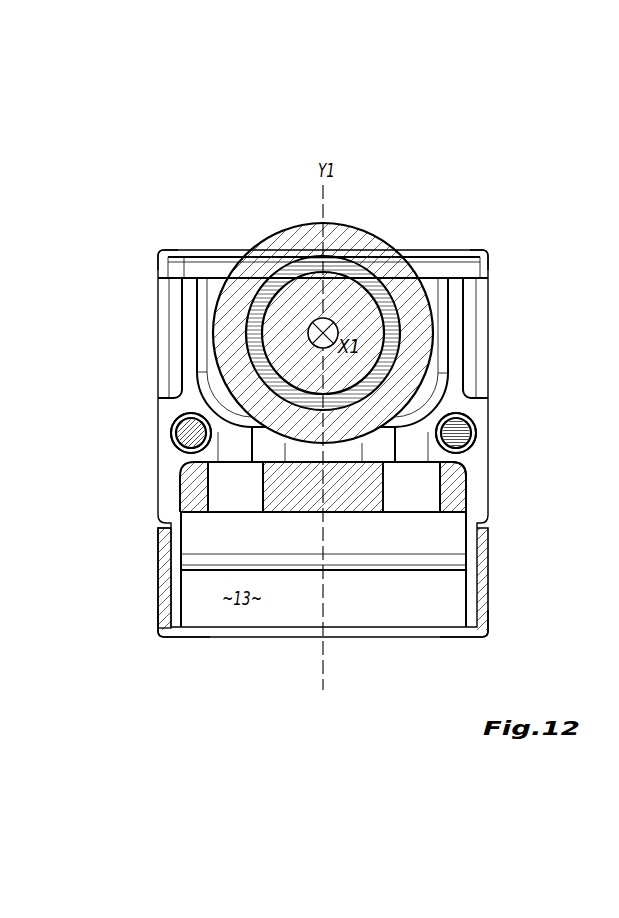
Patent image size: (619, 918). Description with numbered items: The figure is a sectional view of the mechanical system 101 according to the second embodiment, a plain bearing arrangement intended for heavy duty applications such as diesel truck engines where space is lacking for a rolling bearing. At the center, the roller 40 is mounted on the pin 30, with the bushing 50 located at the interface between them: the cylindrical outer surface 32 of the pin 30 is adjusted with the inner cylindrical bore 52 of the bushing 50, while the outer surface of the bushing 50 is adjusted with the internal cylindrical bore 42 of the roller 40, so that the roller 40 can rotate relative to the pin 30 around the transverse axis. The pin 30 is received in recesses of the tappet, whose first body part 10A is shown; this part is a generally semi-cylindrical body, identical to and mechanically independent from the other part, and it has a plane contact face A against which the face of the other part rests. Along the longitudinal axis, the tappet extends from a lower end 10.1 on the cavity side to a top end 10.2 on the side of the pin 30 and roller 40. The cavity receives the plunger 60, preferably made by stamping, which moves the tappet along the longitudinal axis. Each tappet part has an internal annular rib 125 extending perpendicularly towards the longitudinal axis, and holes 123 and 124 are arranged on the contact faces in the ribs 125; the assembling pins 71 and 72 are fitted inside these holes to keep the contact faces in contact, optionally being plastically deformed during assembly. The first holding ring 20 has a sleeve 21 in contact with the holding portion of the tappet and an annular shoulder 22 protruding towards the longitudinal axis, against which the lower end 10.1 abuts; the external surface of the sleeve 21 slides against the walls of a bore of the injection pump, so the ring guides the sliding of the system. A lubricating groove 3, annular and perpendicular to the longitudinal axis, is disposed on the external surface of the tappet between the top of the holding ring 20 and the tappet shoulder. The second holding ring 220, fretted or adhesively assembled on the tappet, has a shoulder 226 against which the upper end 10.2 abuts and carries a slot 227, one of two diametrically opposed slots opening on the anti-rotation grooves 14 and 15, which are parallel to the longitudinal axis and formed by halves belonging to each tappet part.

The mechanical system 101 is at (138, 212).
The lubricating groove 3 is at (492, 525).
The first body part 10A is at (172, 478).
The lower end 10.1 is at (173, 640).
The top end 10.2 is at (176, 268).
The anti-rotation groove 14 is at (172, 338).
The anti-rotation groove 15 is at (478, 340).
The holding ring 20 is at (484, 571).
The sleeve 21 is at (143, 527).
The annular shoulder 22 is at (470, 640).
The pin 30 is at (376, 322).
The cylindrical outer surface 32 is at (299, 271).
The roller 40 is at (345, 232).
The internal cylindrical bore 42 is at (226, 260).
The bushing 50 is at (366, 275).
The inner cylindrical bore 52 is at (264, 268).
The plunger 60 is at (352, 487).
The assembling pin 71 is at (458, 434).
The assembling pin 72 is at (189, 433).
The hole 123 is at (171, 431).
The hole 124 is at (472, 418).
The rib 125 is at (237, 453).
The second holding ring 220 is at (188, 288).
The shoulder 226 is at (156, 255).
The slot 227 is at (490, 248).
The contact face A is at (480, 460).